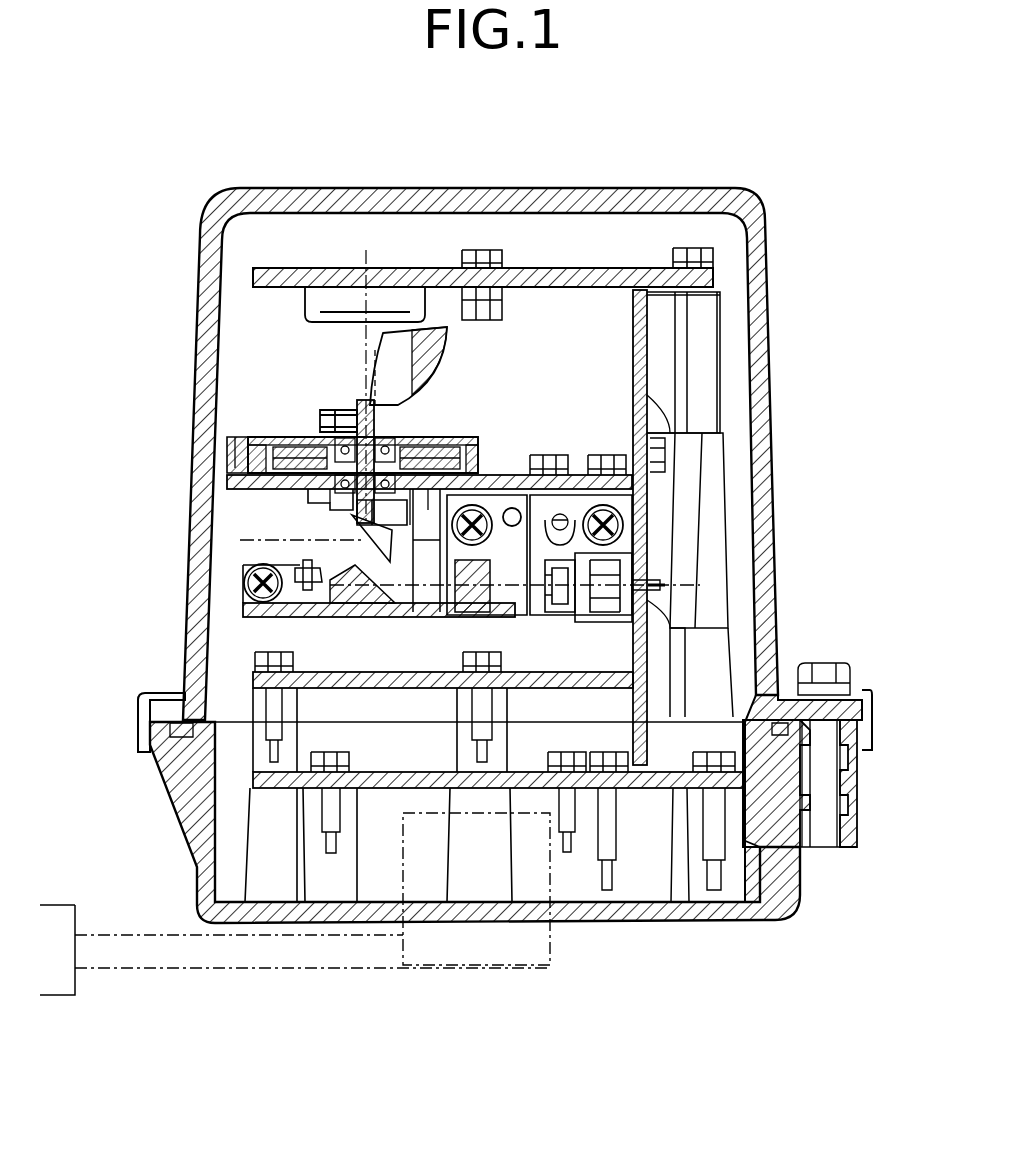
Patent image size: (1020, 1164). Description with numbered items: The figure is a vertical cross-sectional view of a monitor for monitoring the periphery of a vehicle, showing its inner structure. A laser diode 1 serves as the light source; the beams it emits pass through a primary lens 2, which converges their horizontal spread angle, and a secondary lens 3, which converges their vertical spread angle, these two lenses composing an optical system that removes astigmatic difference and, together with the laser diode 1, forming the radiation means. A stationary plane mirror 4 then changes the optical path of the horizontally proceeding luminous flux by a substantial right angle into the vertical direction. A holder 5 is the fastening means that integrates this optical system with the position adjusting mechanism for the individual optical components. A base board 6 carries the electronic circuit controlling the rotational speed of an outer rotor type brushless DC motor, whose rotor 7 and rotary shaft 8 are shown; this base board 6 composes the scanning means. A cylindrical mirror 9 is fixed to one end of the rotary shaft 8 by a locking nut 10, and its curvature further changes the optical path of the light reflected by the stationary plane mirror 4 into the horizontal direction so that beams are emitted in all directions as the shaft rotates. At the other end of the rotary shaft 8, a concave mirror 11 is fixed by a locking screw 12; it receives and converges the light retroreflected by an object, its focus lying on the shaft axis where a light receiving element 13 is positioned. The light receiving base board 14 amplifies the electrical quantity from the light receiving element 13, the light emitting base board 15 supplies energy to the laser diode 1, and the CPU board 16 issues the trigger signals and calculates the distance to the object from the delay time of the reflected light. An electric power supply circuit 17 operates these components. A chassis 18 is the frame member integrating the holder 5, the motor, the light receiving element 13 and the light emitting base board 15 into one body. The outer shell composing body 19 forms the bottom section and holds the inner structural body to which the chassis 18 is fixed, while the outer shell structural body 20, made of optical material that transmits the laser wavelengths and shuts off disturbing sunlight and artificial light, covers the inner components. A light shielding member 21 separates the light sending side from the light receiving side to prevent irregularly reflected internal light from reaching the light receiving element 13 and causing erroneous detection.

The laser diode 1 is at (585, 580).
The primary lens 2 is at (600, 558).
The secondary lens 3 is at (468, 585).
The stationary plane mirror 4 is at (350, 585).
The holder 5 is at (512, 508).
The base board 6 is at (490, 495).
The rotor 7 is at (287, 440).
The rotary shaft 8 is at (362, 520).
The cylindrical mirror 9 is at (345, 513).
The locking nut 10 is at (403, 525).
The concave mirror 11 is at (378, 345).
The locking screw 12 is at (338, 418).
The light receiving element 13 is at (325, 304).
The light receiving base board 14 is at (276, 272).
The light emitting base board 15 is at (652, 337).
The CPU board 16 is at (553, 672).
The electric power supply circuit 17 is at (530, 772).
The chassis 18 is at (722, 360).
The outer shell composing body 19 is at (165, 797).
The outer shell structural body 20 is at (328, 197).
The light shielding member 21 is at (232, 477).